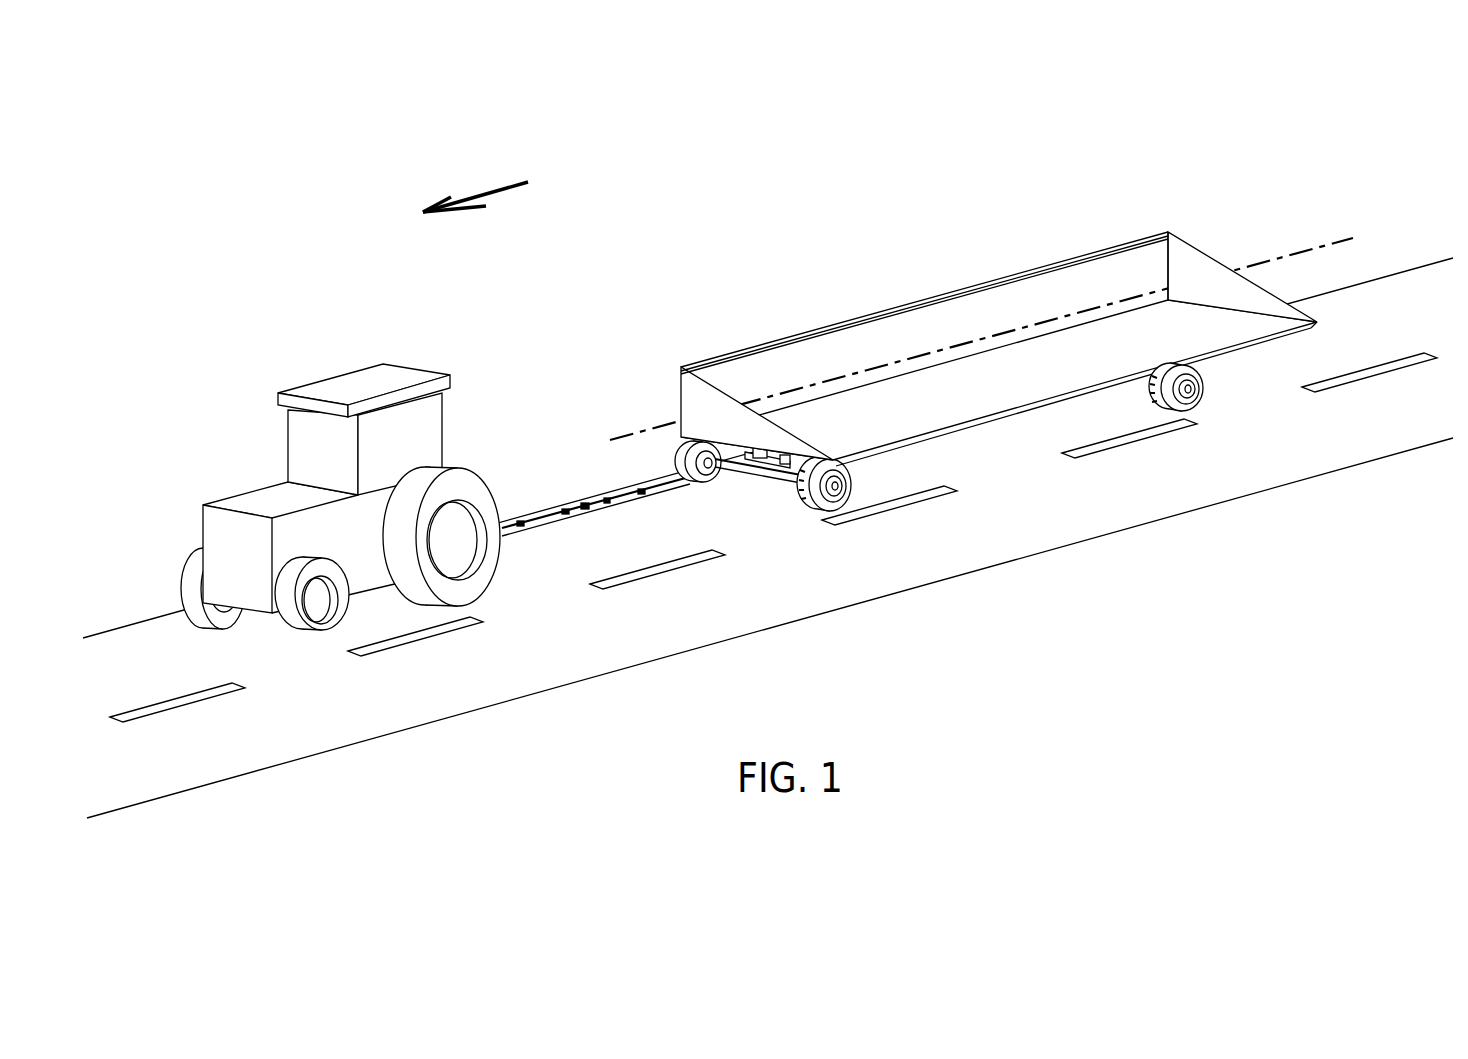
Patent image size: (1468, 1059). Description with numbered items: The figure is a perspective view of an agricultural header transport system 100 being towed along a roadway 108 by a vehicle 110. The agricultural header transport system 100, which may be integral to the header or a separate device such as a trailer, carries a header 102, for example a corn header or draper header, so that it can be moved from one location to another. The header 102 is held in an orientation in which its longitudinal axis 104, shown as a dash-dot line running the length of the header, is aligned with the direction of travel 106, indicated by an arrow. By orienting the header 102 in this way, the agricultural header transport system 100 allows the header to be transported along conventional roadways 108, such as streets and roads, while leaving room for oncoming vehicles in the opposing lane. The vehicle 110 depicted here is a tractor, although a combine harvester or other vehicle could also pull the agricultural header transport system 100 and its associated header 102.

The agricultural header transport system 100 is at (771, 487).
The header 102 is at (967, 289).
The longitudinal axis 104 is at (1108, 300).
The direction of travel 106 is at (506, 184).
The roadway 108 is at (1047, 555).
The vehicle 110 is at (367, 377).